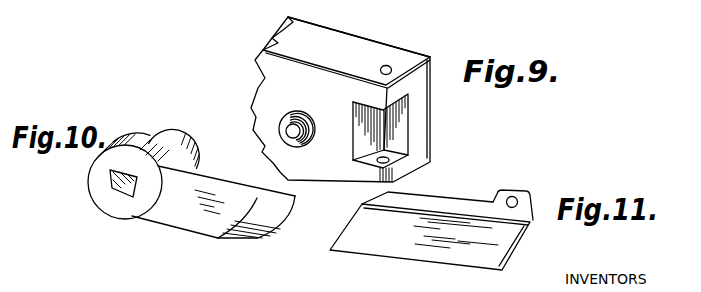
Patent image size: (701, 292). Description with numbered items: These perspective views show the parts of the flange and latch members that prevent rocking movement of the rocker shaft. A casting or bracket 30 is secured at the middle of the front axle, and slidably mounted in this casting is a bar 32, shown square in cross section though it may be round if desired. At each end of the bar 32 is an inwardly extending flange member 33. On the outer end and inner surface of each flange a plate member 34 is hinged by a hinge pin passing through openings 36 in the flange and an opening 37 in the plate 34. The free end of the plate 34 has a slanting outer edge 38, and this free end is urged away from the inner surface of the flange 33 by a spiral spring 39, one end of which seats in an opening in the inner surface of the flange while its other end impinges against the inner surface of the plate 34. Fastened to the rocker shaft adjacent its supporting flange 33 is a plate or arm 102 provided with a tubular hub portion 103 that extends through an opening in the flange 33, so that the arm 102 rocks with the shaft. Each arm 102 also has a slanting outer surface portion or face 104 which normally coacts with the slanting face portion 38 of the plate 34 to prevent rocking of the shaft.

In FIG. 9, the casting or bracket 30 is at (262, 12).
In FIG. 9, the bar 32 is at (287, 44).
In FIG. 9, the flange member 33 is at (374, 42).
In FIG. 11, the plate member 34 is at (383, 238).
In FIG. 9, the openings in the flange 36 is at (391, 66).
In FIG. 11, the opening in the plate 37 is at (515, 197).
In FIG. 11, the slanting outer edge 38 is at (362, 204).
In FIG. 9, the spiral spring 39 is at (281, 133).
In FIG. 10, the plate or arm 102 is at (178, 206).
In FIG. 10, the tubular hub portion 103 is at (173, 134).
In FIG. 10, the slanting outer surface portion or face 104 is at (271, 216).